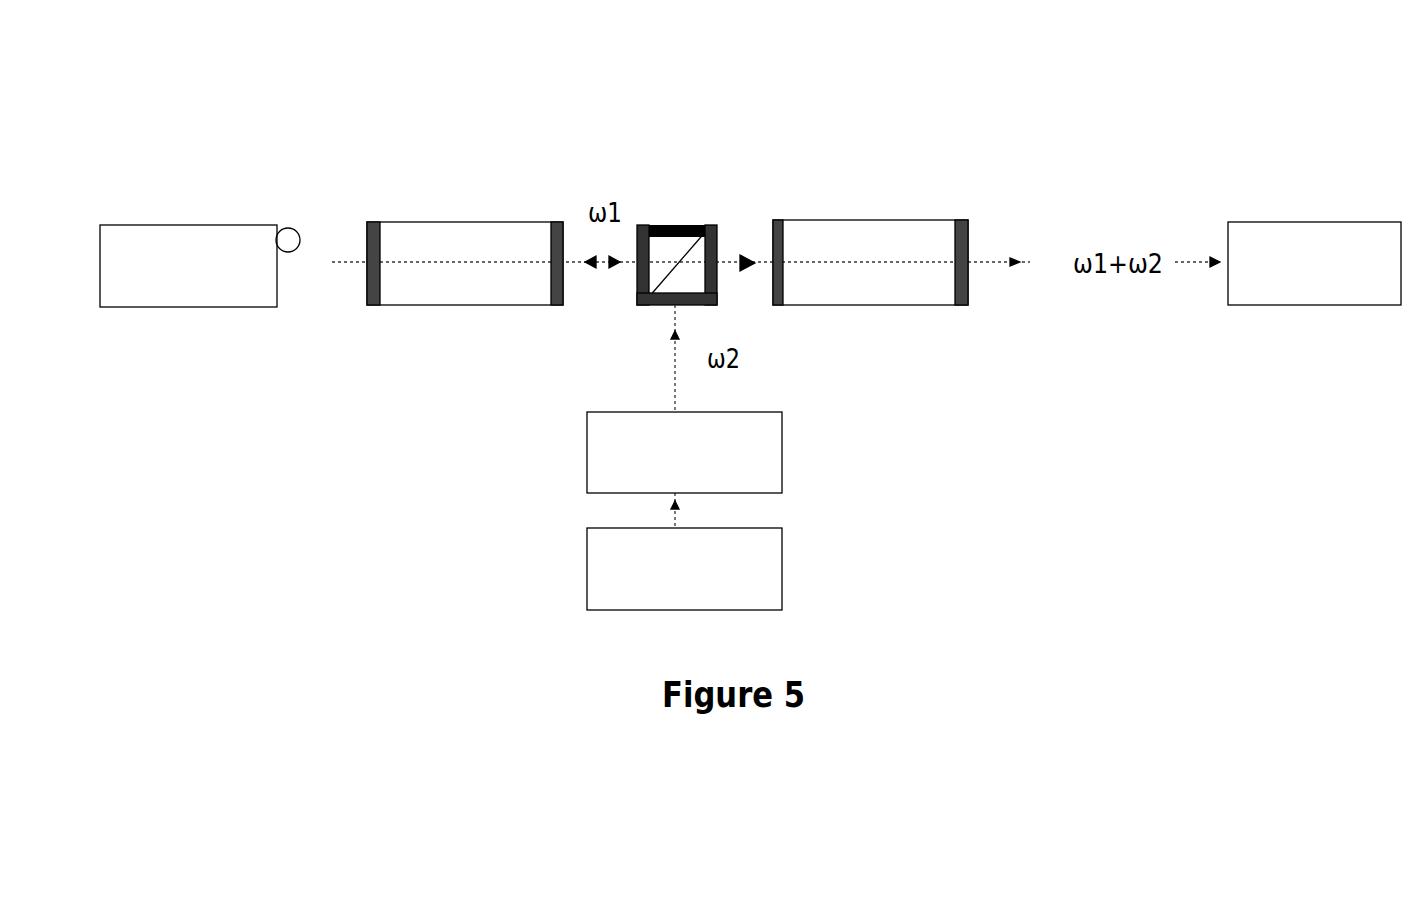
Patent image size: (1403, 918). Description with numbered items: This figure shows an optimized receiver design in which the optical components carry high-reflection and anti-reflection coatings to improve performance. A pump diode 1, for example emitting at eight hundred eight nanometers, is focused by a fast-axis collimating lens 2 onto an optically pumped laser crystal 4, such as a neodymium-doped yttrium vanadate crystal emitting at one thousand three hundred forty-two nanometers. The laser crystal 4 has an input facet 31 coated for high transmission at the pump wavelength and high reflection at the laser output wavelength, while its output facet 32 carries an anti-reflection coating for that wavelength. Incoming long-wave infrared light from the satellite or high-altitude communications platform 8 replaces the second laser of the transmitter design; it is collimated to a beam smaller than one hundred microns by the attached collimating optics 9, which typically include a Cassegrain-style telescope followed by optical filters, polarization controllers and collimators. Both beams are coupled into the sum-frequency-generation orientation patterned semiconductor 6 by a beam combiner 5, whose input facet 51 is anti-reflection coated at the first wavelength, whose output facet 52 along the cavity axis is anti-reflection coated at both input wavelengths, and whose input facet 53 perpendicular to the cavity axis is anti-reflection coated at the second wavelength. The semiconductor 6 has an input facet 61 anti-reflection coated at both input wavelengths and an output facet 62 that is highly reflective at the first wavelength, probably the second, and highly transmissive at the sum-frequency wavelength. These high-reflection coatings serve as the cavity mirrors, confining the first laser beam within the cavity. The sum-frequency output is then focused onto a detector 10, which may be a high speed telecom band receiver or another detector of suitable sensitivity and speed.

The pump diode 1 is at (187, 217).
The fast-axis collimating lens 2 is at (287, 217).
The laser crystal 4 is at (472, 212).
The input facet 31 is at (378, 217).
The output facet 32 is at (555, 217).
The beam combiner 5 is at (670, 217).
The input facet 51 is at (643, 217).
The output facet 52 is at (715, 217).
The input facet perpendicular to the laser cavity axis 53 is at (647, 312).
The orientation patterned semiconductor 6 is at (868, 217).
The input facet 61 is at (782, 215).
The output facet 62 is at (960, 217).
The input LWIR light from the satellite or high-altitude communications platform 8 is at (580, 580).
The collimating optics 9 is at (587, 467).
The detector 10 is at (1302, 220).